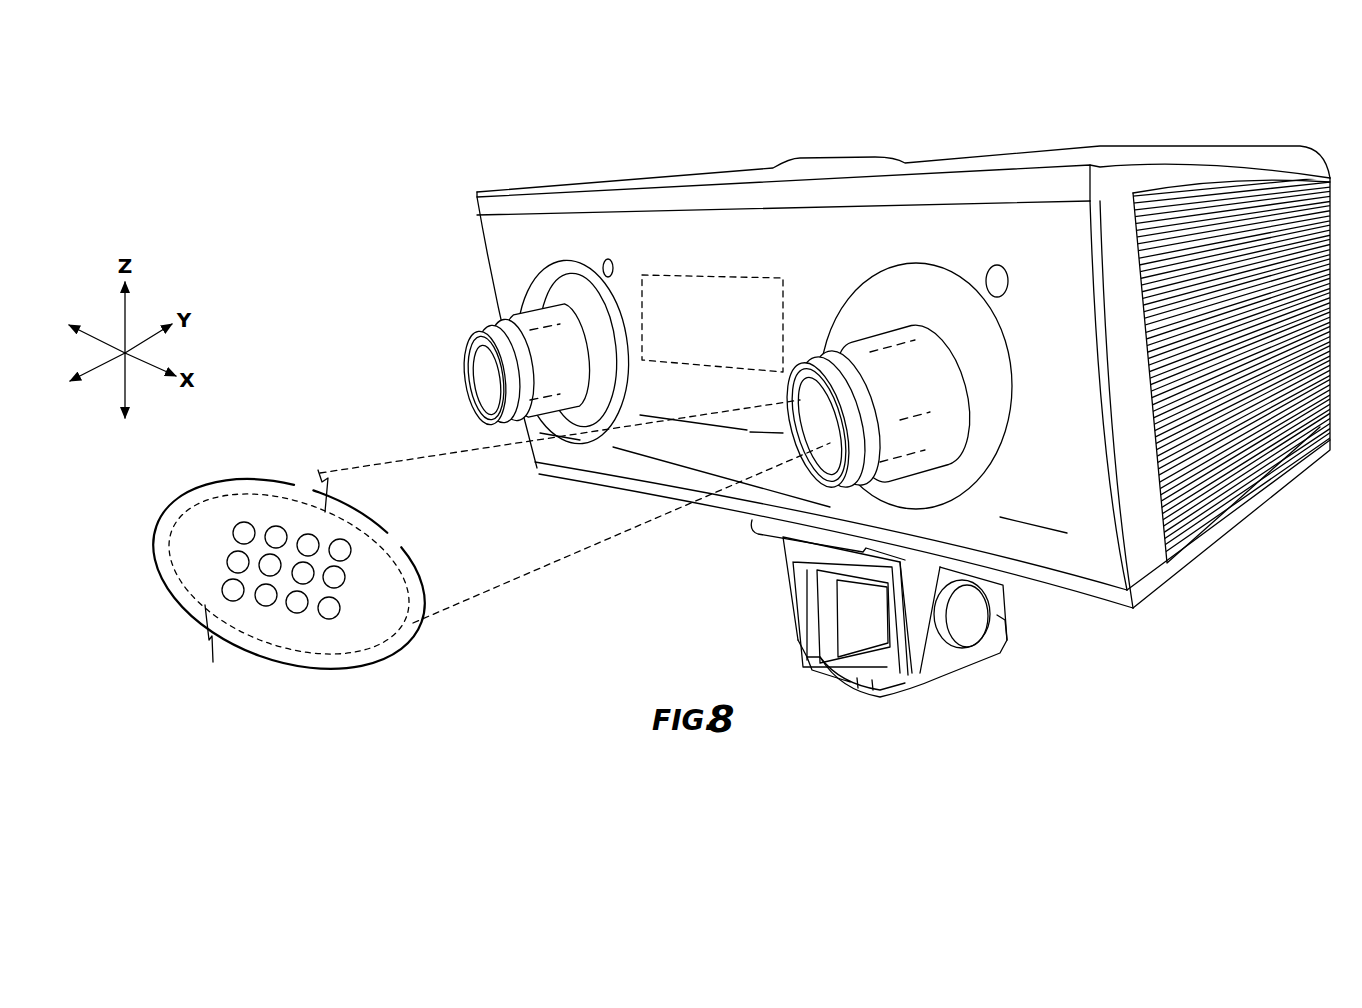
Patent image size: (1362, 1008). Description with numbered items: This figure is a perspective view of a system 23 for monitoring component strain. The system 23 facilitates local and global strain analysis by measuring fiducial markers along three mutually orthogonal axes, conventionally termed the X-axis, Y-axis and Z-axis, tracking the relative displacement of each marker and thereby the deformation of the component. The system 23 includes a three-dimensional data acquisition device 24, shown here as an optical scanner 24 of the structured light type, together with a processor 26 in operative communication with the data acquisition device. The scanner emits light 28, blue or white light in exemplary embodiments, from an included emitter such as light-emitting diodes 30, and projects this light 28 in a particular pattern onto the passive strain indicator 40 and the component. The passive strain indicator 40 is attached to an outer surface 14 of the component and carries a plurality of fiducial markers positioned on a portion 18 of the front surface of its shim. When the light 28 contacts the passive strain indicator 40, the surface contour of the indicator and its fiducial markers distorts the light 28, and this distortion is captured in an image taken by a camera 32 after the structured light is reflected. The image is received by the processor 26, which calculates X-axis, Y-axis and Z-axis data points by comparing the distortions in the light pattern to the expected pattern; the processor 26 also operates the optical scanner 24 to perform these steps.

The system 23 is at (838, 387).
The three-dimensional data acquisition device 24 is at (495, 183).
The processor 26 is at (680, 268).
The emitted light 28 is at (629, 548).
The light-emitting diodes 30 is at (905, 327).
The camera 32 is at (466, 333).
The outer surface 14 is at (288, 581).
The passive strain indicator 40 is at (283, 620).
The portion 18 is at (312, 633).